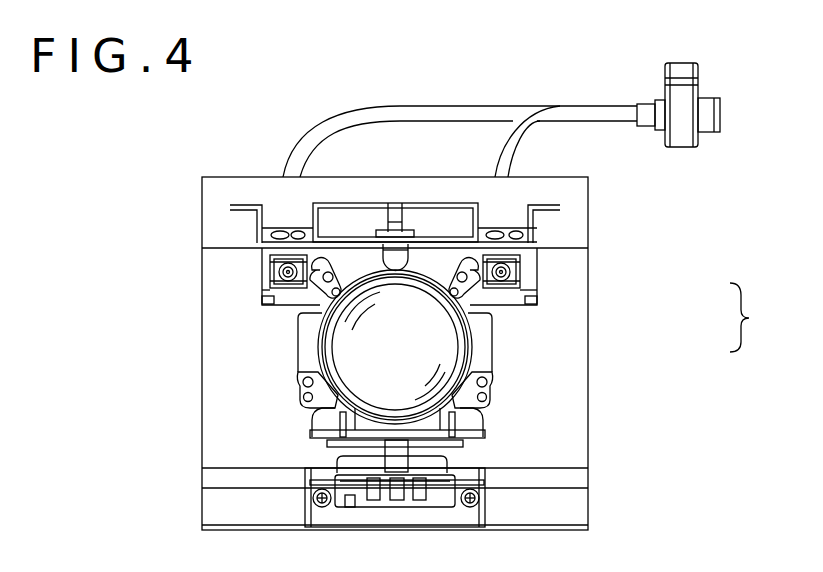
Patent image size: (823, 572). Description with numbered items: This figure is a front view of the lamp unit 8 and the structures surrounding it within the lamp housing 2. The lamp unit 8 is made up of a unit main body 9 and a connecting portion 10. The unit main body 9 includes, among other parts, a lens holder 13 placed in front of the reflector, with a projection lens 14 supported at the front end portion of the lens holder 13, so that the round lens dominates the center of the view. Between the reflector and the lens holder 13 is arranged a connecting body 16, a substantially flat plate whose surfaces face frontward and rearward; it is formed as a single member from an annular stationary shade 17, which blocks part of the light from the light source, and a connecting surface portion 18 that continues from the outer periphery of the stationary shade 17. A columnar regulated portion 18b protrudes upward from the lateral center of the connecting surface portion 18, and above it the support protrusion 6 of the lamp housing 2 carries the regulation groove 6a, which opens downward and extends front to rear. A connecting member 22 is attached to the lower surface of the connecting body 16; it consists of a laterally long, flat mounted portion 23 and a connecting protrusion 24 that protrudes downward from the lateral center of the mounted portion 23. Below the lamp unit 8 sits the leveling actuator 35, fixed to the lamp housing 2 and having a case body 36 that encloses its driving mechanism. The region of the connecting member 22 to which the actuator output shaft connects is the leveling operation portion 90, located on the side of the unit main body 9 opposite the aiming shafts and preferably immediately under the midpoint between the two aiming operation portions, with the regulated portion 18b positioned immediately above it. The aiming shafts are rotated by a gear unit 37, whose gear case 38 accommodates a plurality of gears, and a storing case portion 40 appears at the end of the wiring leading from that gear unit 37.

The lamp housing 2 is at (578, 372).
The support protrusion 6 is at (350, 203).
The regulation groove 6a is at (380, 226).
The lamp unit 8 is at (298, 342).
The unit main body 9 is at (452, 330).
The connecting portion 10 is at (756, 317).
The lens holder 13 is at (495, 335).
The projection lens 14 is at (335, 352).
The connecting body 16 is at (262, 262).
The stationary shade 17 is at (298, 364).
The connecting surface portion 18 is at (537, 290).
The regulated portion 18b is at (410, 226).
The connecting member 22 is at (487, 460).
The mounted portion 23 is at (340, 443).
The connecting protrusion 24 is at (385, 462).
The leveling actuator 35 is at (395, 500).
The case body 36 is at (402, 500).
The gear unit 37 is at (690, 63).
The gear case 38 is at (690, 74).
The storing case portion 40 is at (690, 100).
The leveling operation portion 90 is at (487, 462).